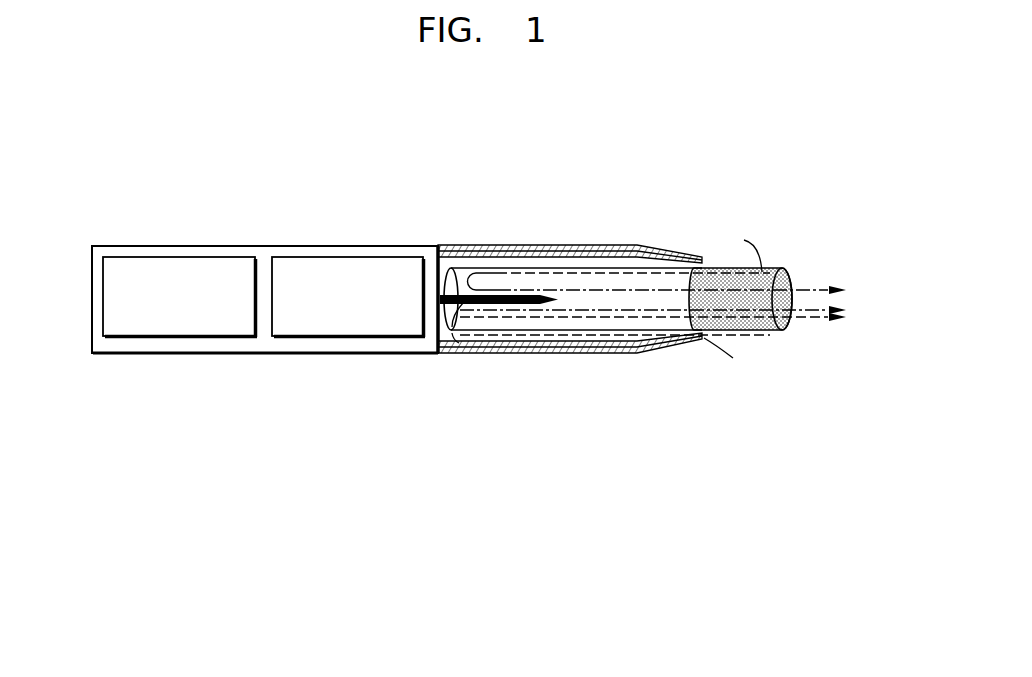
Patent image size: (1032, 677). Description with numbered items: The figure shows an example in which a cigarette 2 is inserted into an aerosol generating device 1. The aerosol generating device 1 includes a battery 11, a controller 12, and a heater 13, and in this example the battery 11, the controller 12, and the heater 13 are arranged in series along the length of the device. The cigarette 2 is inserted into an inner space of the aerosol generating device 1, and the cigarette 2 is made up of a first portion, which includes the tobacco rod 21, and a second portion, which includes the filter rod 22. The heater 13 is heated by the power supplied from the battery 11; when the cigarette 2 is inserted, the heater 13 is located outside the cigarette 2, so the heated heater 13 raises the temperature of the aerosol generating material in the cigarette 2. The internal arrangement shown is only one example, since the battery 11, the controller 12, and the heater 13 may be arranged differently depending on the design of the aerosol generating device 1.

The aerosol generating device 1 is at (664, 152).
The cigarette 2 is at (768, 341).
The battery 11 is at (188, 257).
The controller 12 is at (363, 257).
The heater 13 is at (497, 290).
The tobacco rod 21 is at (585, 270).
The filter rod 22 is at (777, 268).